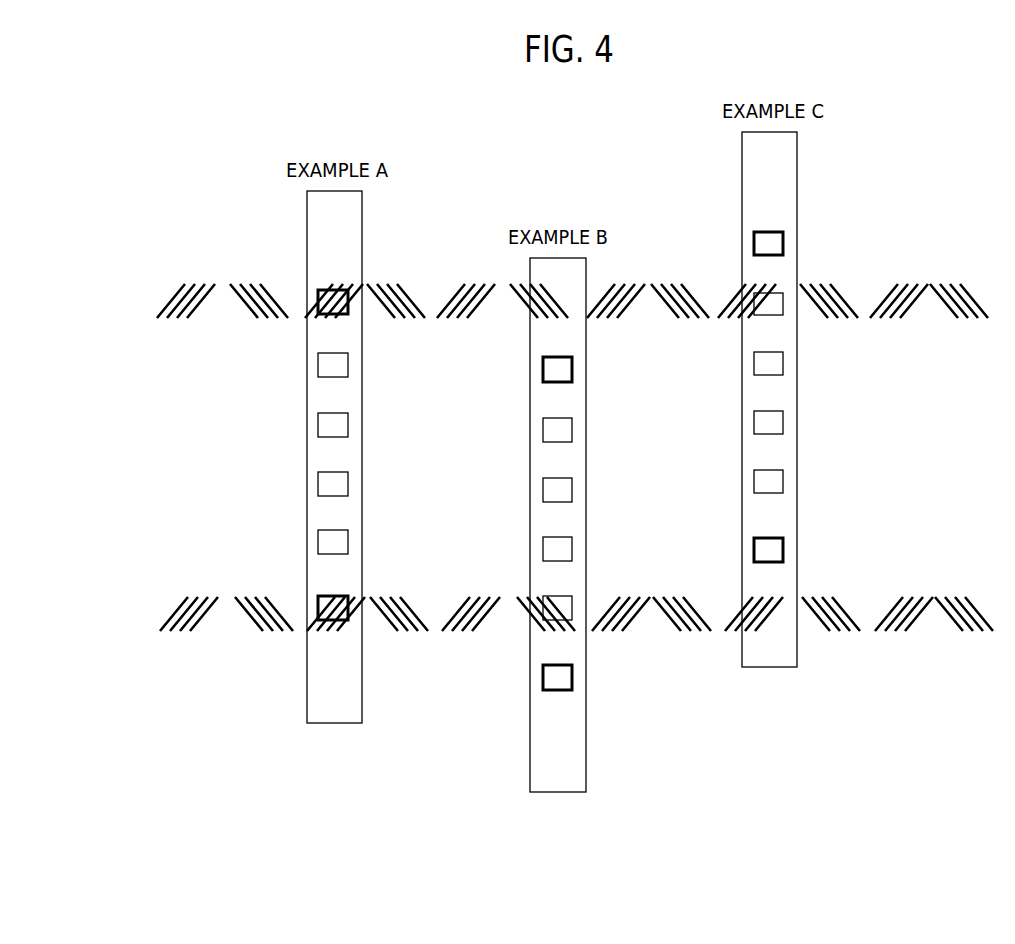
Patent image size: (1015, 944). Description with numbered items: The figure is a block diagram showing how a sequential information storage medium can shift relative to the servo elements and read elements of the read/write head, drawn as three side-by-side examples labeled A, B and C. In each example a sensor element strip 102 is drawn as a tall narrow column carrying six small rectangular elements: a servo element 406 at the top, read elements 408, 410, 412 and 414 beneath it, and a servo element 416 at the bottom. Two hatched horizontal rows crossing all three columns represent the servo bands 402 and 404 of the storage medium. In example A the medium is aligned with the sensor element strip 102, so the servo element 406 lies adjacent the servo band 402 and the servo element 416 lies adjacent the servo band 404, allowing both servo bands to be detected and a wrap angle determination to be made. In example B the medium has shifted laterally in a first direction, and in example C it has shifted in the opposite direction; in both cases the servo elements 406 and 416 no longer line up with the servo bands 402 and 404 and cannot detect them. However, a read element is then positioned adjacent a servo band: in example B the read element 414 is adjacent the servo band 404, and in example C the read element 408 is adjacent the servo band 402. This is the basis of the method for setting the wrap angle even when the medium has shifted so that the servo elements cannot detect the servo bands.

The sensor element strip 102 is at (336, 738).
The servo band 402 is at (914, 280).
The servo band 404 is at (920, 595).
The servo element 406 is at (338, 307).
The read element 408 is at (338, 373).
The read element 410 is at (338, 428).
The read element 412 is at (338, 485).
The read element 414 is at (338, 545).
The servo element 416 is at (338, 612).